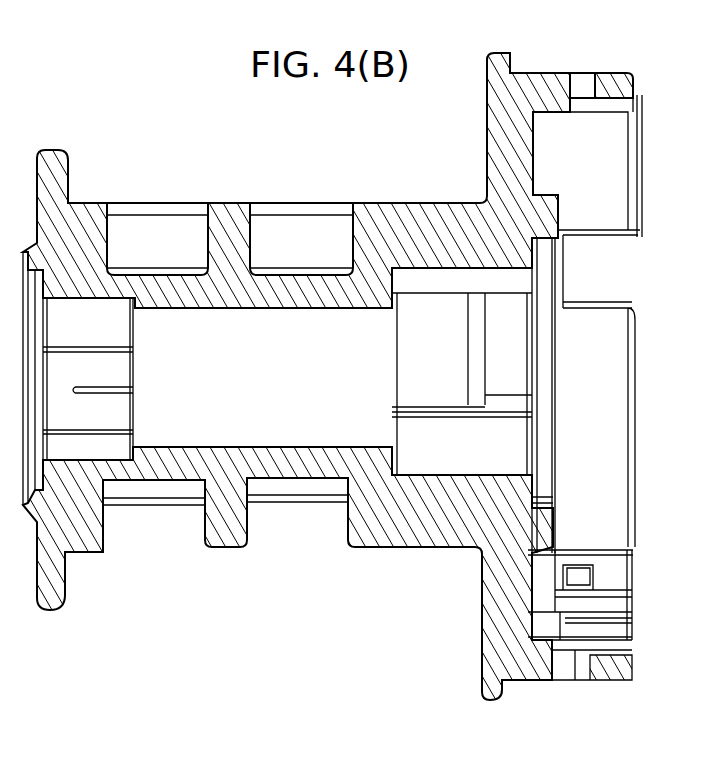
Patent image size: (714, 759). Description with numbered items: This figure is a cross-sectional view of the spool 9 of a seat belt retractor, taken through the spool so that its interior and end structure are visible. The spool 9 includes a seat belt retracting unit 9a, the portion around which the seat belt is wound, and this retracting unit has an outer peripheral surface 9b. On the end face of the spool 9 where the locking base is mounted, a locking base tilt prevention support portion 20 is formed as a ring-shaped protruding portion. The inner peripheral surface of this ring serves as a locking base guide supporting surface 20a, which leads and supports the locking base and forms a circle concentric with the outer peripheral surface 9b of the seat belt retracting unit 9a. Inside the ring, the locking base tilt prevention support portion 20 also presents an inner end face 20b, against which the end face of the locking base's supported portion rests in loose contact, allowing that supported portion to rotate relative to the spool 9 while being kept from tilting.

The spool 9 is at (184, 172).
The seat belt retracting unit 9a is at (368, 218).
The outer peripheral surface 9b is at (410, 200).
The locking base tilt prevention support portion 20 is at (557, 222).
The locking base guide supporting surface 20a is at (543, 240).
The inner end face 20b is at (527, 258).